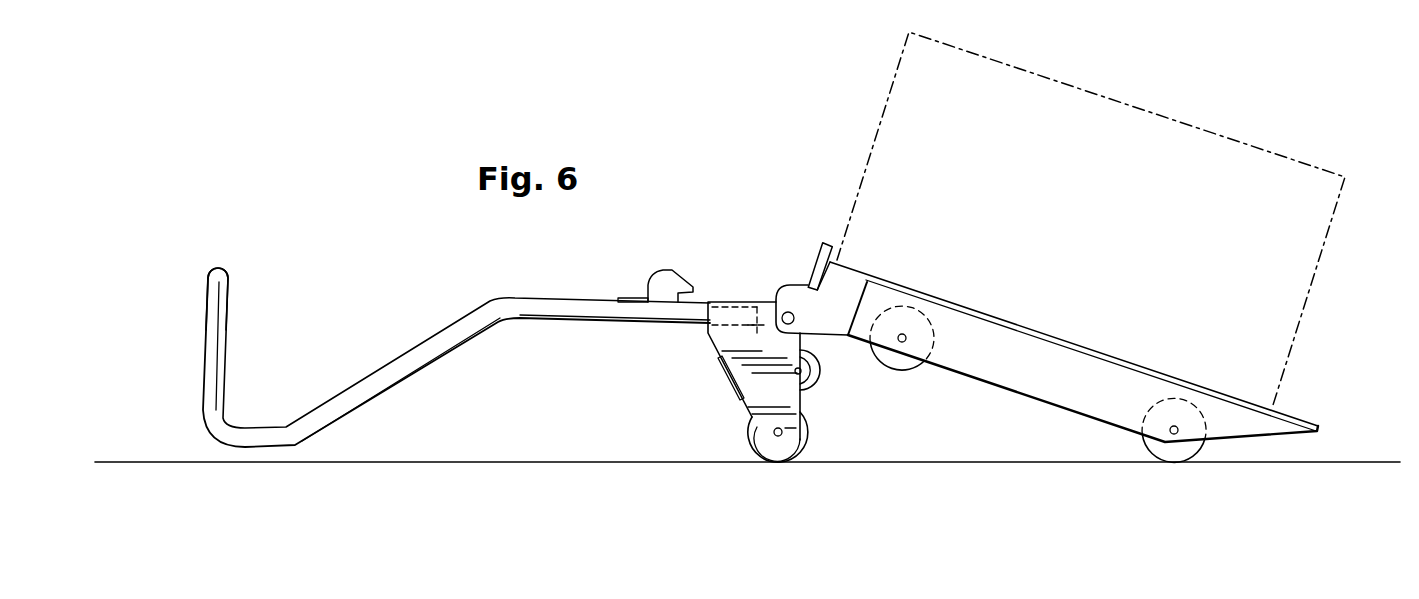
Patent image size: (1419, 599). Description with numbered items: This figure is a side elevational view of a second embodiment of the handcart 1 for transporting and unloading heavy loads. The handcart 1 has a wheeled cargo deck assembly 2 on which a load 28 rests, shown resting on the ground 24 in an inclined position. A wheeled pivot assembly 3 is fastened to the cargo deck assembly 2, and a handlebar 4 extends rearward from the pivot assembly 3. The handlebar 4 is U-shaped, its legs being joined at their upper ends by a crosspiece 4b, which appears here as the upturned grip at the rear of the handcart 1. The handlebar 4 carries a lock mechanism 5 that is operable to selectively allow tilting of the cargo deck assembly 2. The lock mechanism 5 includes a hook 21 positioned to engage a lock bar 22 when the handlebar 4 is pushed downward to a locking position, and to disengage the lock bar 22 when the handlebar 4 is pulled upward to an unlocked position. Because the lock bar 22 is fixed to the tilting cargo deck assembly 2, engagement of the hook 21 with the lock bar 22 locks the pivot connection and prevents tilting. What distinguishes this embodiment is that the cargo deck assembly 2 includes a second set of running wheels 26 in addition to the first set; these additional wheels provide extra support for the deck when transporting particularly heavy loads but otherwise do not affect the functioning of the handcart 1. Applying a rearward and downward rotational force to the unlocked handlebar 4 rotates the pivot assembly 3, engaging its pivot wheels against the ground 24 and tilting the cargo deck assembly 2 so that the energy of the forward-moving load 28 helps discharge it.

The handcart 1 is at (372, 212).
The wheeled cargo deck assembly 2 is at (1302, 402).
The wheeled pivot assembly 3 is at (685, 388).
The handlebar 4 is at (483, 290).
The crosspiece 4b is at (210, 327).
The lock mechanism 5 is at (653, 252).
The hook 21 is at (647, 288).
The lock bar 22 is at (820, 262).
The ground 24 is at (447, 462).
The second set of running wheels 26 is at (905, 363).
The load 28 is at (1240, 148).